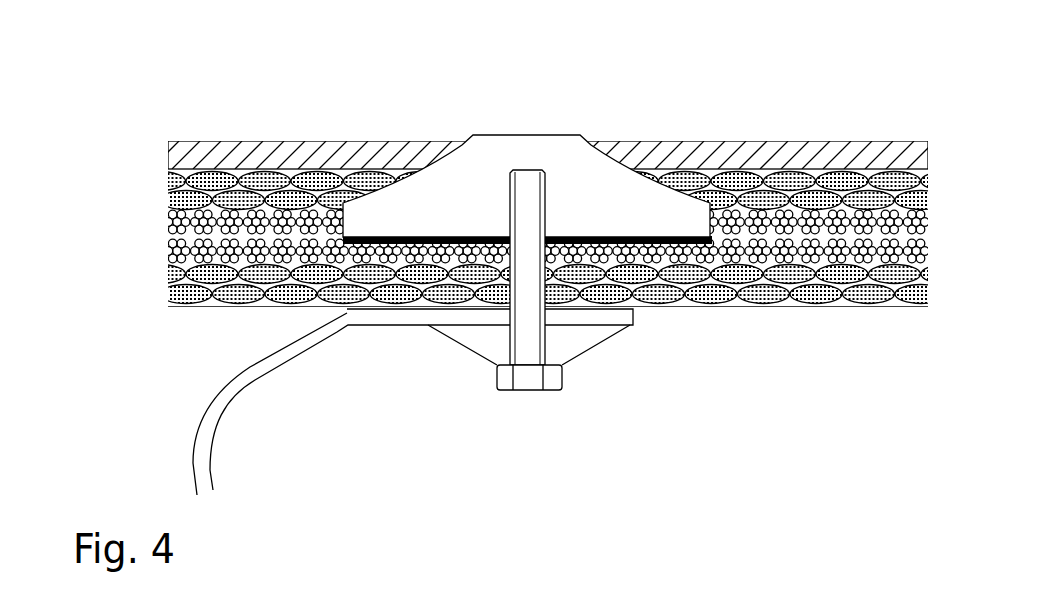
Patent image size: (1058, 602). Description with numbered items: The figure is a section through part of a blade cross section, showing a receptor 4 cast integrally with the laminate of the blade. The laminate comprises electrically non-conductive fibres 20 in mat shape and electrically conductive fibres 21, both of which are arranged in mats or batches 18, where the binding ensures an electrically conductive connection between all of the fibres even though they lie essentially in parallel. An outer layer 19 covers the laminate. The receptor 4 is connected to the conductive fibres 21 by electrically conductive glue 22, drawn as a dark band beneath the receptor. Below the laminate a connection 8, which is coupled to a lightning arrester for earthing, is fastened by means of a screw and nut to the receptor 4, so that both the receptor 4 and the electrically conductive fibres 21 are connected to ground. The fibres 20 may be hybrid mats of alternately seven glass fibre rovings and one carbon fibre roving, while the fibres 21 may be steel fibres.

The receptor 4 is at (495, 152).
The connection 8 is at (242, 385).
The mats 18 is at (523, 225).
The cover layer 19 is at (703, 150).
The electrically non-conductive fibres 20 is at (263, 277).
The electrically conductive fibres 21 is at (787, 250).
The electrically conductive glue 22 is at (677, 243).